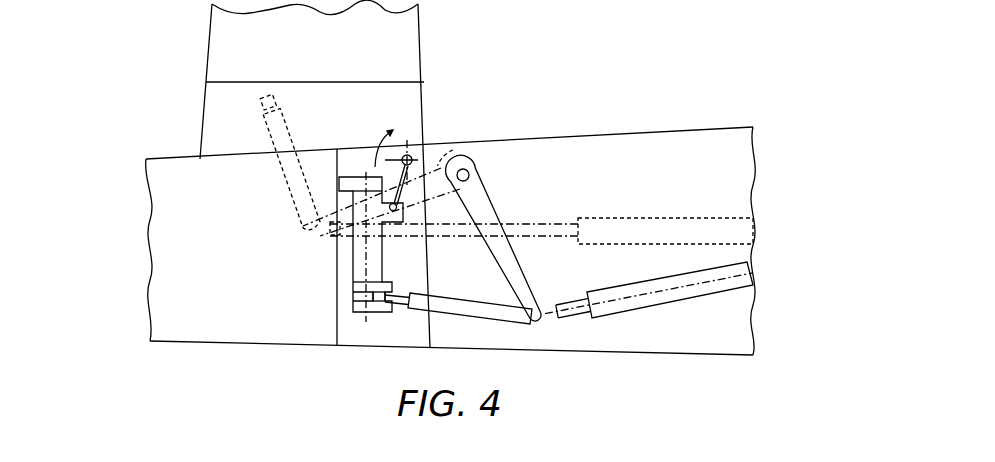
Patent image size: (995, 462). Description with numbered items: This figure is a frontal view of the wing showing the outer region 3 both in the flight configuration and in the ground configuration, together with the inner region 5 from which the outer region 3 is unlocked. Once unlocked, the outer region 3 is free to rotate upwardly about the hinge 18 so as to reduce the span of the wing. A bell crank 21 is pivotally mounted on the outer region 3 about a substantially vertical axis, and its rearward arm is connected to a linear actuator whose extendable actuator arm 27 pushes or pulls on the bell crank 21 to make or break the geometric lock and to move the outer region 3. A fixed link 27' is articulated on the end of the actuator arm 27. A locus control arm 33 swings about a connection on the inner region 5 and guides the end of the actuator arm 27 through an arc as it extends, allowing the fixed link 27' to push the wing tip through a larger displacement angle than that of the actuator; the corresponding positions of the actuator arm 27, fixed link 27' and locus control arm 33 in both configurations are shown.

The outer region 3 is at (249, 54).
The inner region 5 is at (714, 165).
The hinge 18 is at (401, 154).
The bell crank 21 is at (352, 268).
The actuator arm 27 is at (541, 260).
The fixed link 27' is at (384, 209).
The locus control arm 33 is at (447, 147).